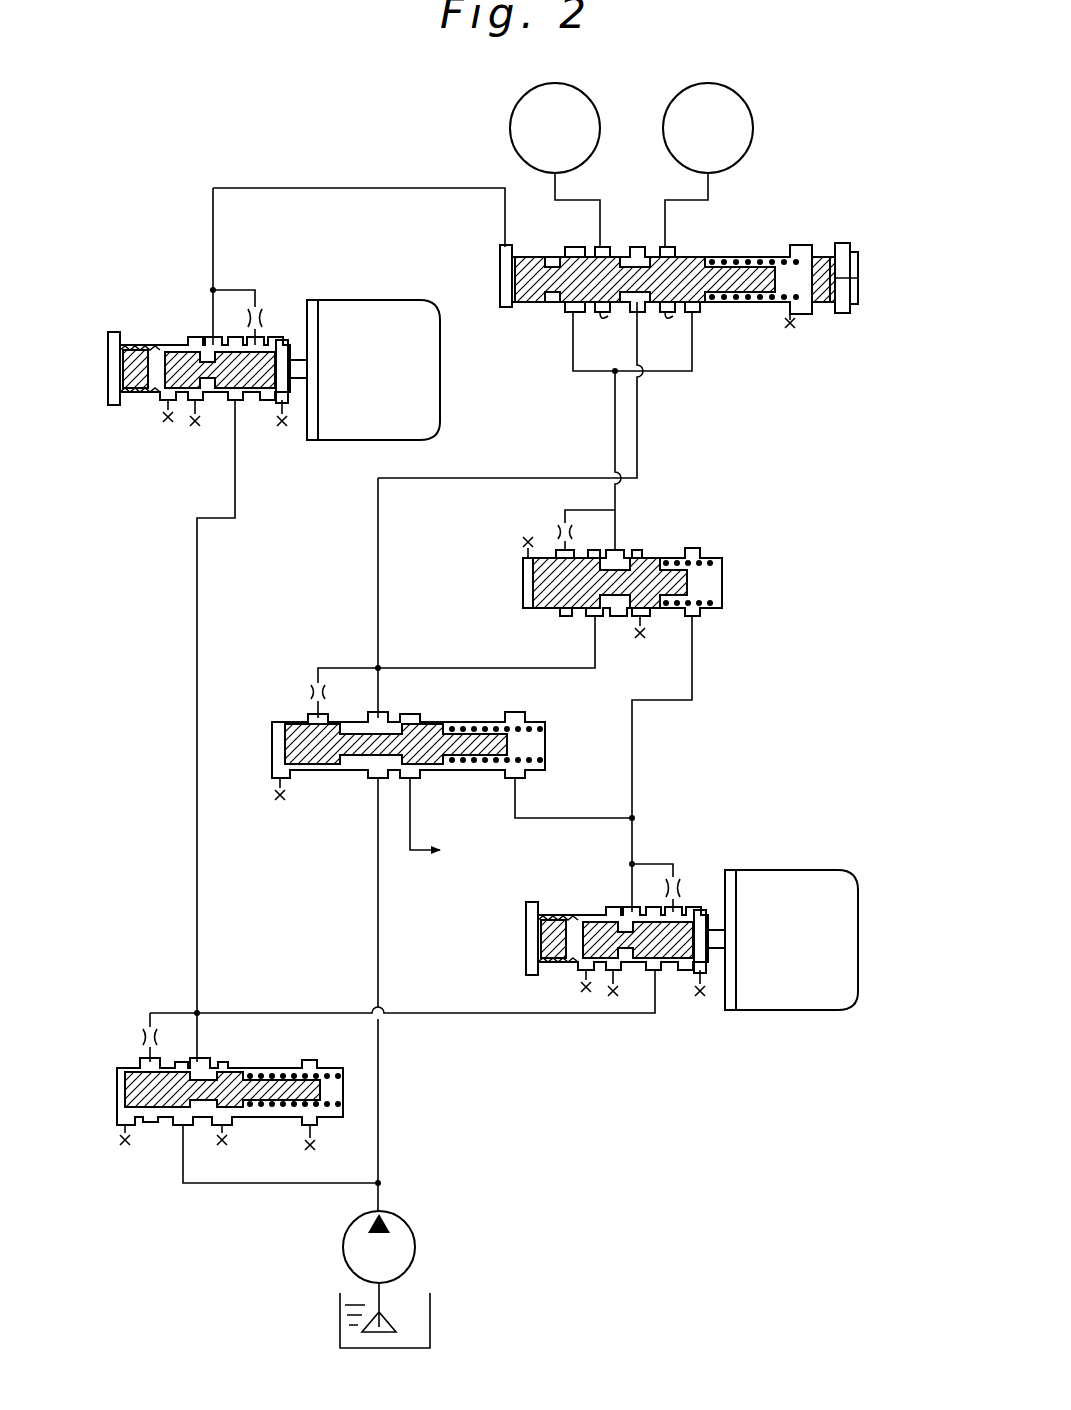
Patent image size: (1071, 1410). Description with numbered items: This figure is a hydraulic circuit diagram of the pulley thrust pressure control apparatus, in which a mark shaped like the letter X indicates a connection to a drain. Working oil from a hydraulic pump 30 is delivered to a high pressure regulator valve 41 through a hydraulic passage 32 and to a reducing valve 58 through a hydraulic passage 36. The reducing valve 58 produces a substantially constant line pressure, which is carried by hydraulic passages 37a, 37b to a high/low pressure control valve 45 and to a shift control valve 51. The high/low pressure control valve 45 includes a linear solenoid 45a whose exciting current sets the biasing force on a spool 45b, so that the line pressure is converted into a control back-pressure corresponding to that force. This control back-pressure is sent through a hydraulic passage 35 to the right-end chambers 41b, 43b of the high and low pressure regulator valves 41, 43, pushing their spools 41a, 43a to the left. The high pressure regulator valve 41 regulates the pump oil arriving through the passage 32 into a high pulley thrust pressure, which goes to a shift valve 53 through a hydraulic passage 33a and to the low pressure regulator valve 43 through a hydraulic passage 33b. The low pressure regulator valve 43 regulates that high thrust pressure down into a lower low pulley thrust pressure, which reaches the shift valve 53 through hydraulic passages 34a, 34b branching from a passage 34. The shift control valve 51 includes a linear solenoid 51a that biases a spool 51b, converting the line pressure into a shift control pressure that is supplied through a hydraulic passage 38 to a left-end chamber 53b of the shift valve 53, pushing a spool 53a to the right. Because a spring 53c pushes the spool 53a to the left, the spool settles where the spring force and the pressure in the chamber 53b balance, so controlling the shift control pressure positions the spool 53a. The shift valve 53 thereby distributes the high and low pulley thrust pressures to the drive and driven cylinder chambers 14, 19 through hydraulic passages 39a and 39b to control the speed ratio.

The drive cylinder chamber 14 is at (537, 145).
The driven cylinder chamber 19 is at (690, 145).
The hydraulic pump 30 is at (416, 1243).
The hydraulic passage 32 is at (380, 1113).
The hydraulic passage 33a is at (380, 570).
The hydraulic passage 33b is at (438, 668).
The hydraulic passage 34 is at (615, 470).
The hydraulic passage 34a is at (573, 345).
The hydraulic passage 34b is at (695, 355).
The hydraulic passage 35 is at (633, 845).
The hydraulic passage 36 is at (233, 1183).
The hydraulic passage 37a is at (538, 1014).
The hydraulic passage 37b is at (200, 875).
The hydraulic passage 38 is at (327, 188).
The hydraulic passage 39a is at (585, 200).
The hydraulic passage 39b is at (710, 190).
The high pressure regulator valve 41 is at (450, 772).
The spool 41a is at (428, 730).
The right-end chamber 41b is at (533, 745).
The low pressure regulator valve 43 is at (668, 583).
The spool 43a is at (580, 595).
The right-end chamber 43b is at (708, 580).
The high/low pressure control valve 45 is at (692, 908).
The linear solenoid 45a is at (775, 962).
The spool 45b is at (605, 933).
The shift control valve 51 is at (274, 335).
The linear solenoid 51a is at (358, 390).
The spool 51b is at (190, 356).
The shift valve 53 is at (657, 276).
The spool 53a is at (632, 277).
The left-end chamber 53b is at (505, 305).
The spring 53c is at (777, 305).
The reducing valve 58 is at (240, 1063).